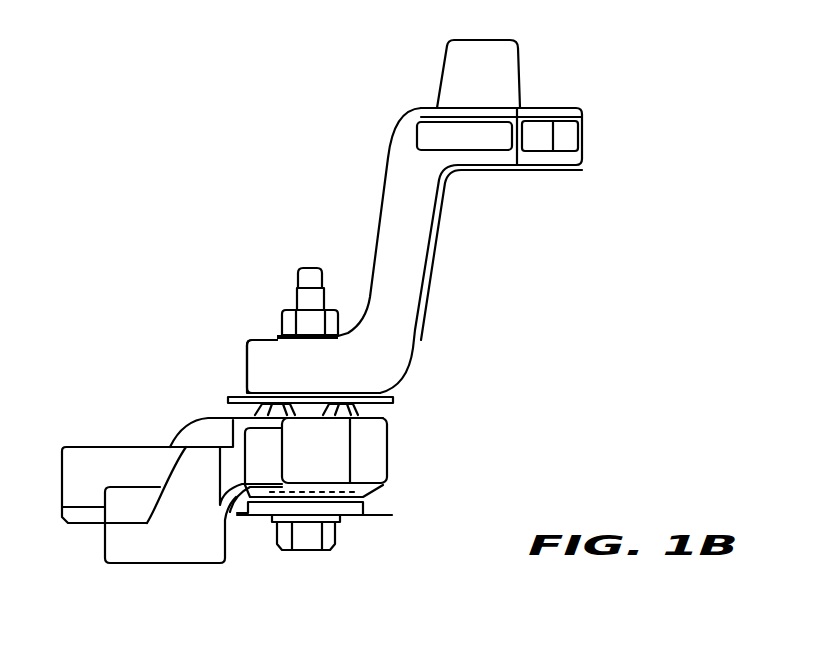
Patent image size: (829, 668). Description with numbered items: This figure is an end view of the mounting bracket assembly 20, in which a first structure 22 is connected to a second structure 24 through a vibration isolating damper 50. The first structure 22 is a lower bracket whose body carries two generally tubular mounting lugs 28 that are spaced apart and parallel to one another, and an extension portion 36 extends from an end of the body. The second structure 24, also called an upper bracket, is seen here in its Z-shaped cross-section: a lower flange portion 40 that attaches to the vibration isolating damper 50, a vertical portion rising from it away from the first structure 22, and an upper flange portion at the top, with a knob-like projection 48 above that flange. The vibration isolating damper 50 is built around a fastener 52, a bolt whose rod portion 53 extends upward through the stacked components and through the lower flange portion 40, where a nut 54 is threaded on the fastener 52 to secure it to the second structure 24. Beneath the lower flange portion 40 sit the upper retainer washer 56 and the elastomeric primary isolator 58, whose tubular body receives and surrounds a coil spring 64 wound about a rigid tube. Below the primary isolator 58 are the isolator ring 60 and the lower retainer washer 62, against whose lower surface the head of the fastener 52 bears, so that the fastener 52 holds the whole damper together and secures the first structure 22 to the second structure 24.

The mounting bracket assembly 20 is at (367, 105).
The first structure 22 is at (91, 443).
The second structure 24 is at (551, 101).
The mounting lugs 28 is at (115, 467).
The extension portion 36 is at (330, 455).
The lower flange portion 40 is at (262, 352).
The knob 48 is at (472, 63).
The vibration isolating dampers 50 is at (226, 395).
The fastener 52 is at (310, 267).
The rod portion 53 is at (308, 532).
The nut 54 is at (318, 318).
The upper retainer washer 56 is at (233, 399).
The primary isolator 58 is at (352, 416).
The isolator ring 60 is at (377, 512).
The lower retainer washer 62 is at (377, 516).
The coil spring 64 is at (363, 495).